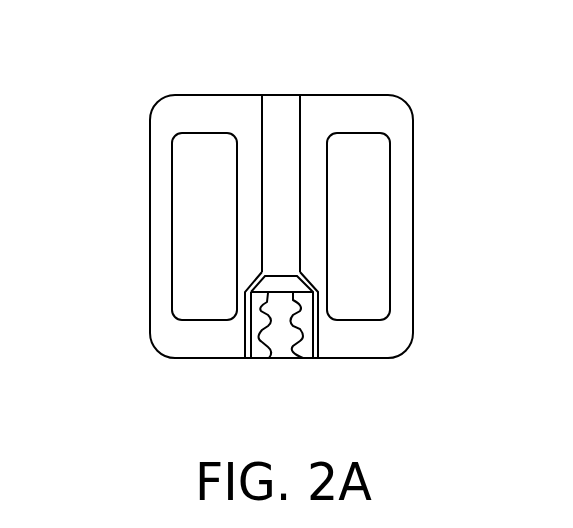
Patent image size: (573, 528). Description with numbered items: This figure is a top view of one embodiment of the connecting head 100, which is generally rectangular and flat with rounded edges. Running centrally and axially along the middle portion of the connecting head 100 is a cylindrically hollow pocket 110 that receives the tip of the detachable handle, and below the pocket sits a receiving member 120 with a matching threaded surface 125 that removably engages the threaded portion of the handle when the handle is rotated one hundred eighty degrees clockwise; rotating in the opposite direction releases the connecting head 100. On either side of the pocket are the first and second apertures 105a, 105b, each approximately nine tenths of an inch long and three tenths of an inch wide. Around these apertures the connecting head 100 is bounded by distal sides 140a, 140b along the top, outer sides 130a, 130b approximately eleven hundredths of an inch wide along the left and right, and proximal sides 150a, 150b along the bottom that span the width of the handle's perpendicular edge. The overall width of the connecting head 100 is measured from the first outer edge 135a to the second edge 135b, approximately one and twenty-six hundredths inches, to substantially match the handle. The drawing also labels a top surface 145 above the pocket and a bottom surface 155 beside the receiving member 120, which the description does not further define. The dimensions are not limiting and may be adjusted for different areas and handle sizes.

The connecting head 100 is at (452, 111).
The first aperture 105a is at (197, 248).
The second aperture 105b is at (365, 249).
The cylindrically hollow pocket 110 is at (283, 112).
The receiving member 120 is at (257, 325).
The matching threaded surface 125 is at (275, 330).
The first outer side 130a is at (157, 213).
The second outer side 130b is at (403, 215).
The first outer edge 135a is at (150, 178).
The second edge 135b is at (413, 179).
The first distal side 140a is at (202, 112).
The second distal side 140b is at (361, 112).
The top surface 145 is at (233, 95).
The first proximal side 150a is at (202, 343).
The second proximal side 150b is at (360, 343).
The bottom surface 155 is at (340, 358).